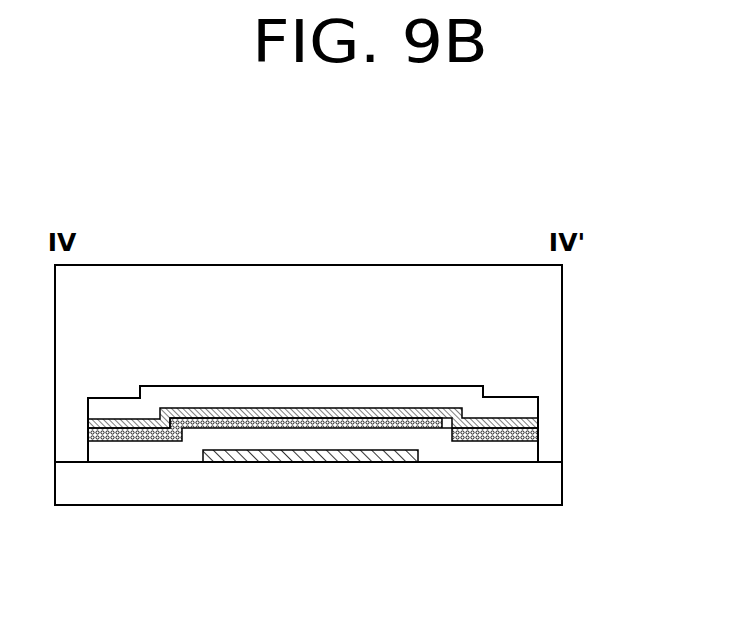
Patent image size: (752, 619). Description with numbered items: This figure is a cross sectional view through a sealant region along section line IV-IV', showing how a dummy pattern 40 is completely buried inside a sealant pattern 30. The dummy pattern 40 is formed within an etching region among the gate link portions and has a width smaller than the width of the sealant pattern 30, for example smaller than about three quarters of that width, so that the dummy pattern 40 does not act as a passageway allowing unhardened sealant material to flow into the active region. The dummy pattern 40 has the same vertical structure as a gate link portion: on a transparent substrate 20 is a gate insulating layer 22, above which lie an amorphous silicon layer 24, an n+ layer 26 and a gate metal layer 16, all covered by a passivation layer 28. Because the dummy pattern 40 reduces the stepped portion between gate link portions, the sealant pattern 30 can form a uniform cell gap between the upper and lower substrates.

The gate metal layer 16 is at (233, 463).
The transparent substrate 20 is at (525, 488).
The gate insulating layer 22 is at (535, 450).
The amorphous silicon layer 24 is at (538, 432).
The n+ layer 26 is at (530, 418).
The passivation layer 28 is at (530, 397).
The sealant pattern 30 is at (550, 306).
The dummy pattern 40 is at (228, 372).